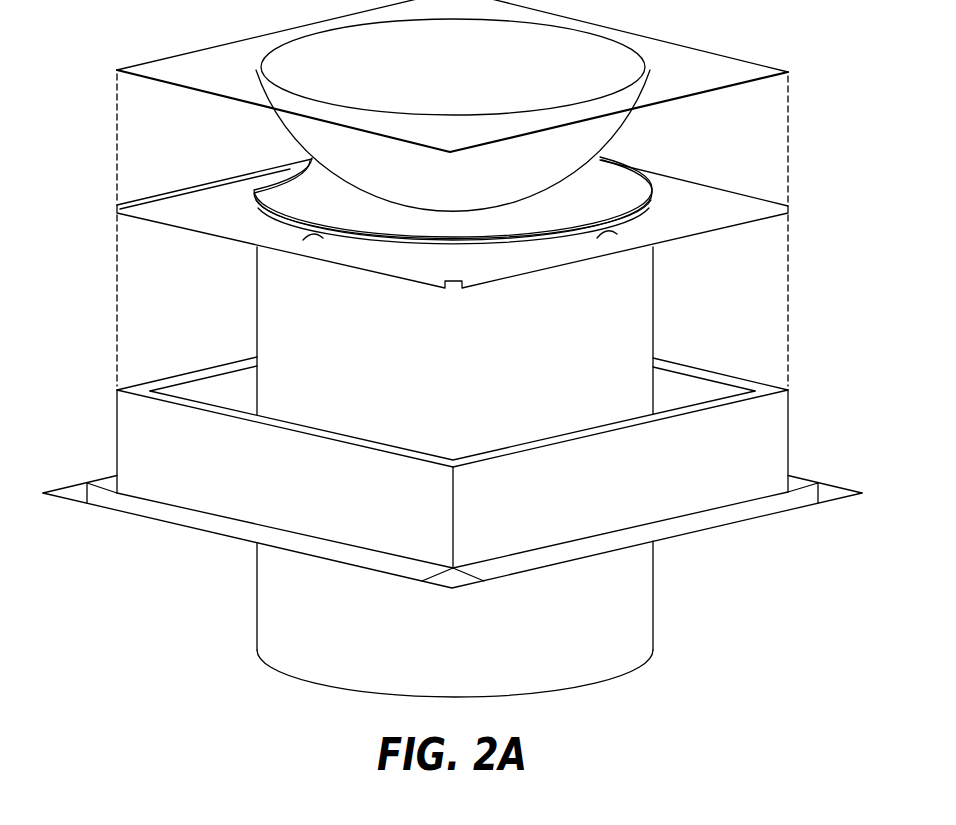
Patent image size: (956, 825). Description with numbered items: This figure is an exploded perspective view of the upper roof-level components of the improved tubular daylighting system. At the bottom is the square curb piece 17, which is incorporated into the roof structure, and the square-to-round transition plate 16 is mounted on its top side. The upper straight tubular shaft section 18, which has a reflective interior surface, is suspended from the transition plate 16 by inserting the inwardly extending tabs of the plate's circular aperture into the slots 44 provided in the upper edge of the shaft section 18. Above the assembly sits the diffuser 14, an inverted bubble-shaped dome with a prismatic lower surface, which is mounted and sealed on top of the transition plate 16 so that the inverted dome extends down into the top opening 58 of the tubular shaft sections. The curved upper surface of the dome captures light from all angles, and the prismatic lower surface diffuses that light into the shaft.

The diffuser 14 is at (623, 128).
The square-to-round transition plate 16 is at (792, 212).
The square curb piece 17 is at (777, 422).
The upper straight tubular shaft section 18 is at (655, 314).
The slots 44 is at (618, 231).
The top opening 58 is at (303, 182).